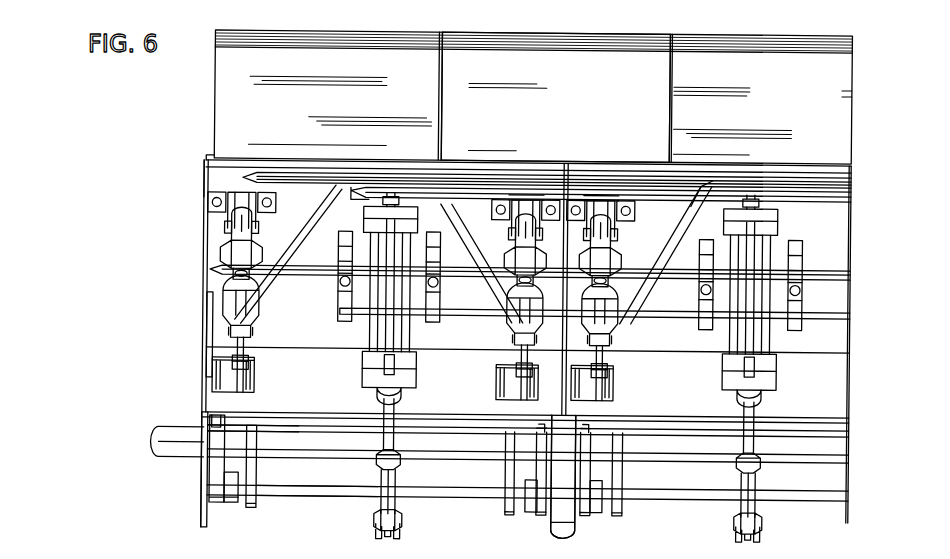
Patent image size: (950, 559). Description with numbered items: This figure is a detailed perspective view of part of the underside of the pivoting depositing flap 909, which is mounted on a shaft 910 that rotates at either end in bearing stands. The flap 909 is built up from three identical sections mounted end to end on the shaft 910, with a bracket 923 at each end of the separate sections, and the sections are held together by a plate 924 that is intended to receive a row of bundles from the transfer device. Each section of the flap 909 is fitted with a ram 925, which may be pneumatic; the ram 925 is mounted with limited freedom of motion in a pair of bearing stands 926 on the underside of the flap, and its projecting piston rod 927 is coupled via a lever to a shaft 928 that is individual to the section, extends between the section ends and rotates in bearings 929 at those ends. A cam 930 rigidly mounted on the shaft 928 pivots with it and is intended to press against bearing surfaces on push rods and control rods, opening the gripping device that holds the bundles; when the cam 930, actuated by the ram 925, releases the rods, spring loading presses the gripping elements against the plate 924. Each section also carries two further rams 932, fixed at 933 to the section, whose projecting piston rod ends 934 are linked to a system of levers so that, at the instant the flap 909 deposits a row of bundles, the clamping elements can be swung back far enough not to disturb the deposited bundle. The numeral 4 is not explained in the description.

The panel unit 4 is at (567, 124).
The pivoting depositing flap 909 is at (182, 203).
The shaft 910 is at (175, 437).
The bracket 923 is at (205, 472).
The plate 924 is at (207, 158).
The ram 925 is at (382, 342).
The bearing stands 926 is at (338, 295).
The piston rod 927 is at (410, 432).
The shaft 928 is at (335, 492).
The bearings 929 is at (234, 506).
The cam 930 is at (275, 430).
The further rams 932 is at (228, 284).
The fixing point 933 is at (262, 238).
The piston rod ends 934 is at (256, 349).